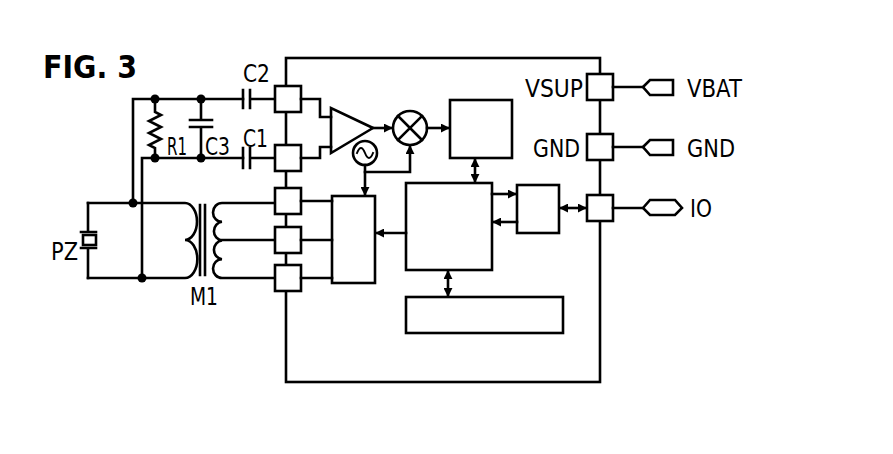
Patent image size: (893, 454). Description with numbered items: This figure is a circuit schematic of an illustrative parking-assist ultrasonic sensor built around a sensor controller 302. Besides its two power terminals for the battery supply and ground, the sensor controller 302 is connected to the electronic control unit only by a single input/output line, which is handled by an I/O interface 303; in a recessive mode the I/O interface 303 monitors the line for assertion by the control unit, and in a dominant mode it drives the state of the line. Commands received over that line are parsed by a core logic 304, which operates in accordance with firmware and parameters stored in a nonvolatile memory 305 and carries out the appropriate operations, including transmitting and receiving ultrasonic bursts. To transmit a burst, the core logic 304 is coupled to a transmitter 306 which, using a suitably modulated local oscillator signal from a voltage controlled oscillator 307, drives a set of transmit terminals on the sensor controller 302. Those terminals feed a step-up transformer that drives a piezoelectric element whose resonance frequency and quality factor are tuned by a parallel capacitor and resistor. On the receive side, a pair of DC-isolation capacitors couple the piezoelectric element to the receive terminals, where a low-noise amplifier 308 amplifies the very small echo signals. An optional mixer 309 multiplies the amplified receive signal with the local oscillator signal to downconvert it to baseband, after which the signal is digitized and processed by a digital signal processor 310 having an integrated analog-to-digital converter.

The sensor controller 302 is at (555, 59).
The I/O interface 303 is at (547, 233).
The core logic 304 is at (493, 242).
The nonvolatile memory 305 is at (518, 333).
The transmitter 306 is at (340, 283).
The voltage controlled oscillator 307 is at (360, 166).
The low-noise amplifier 308 is at (343, 99).
The mixer 309 is at (402, 111).
The digital signal processor 310 is at (468, 100).